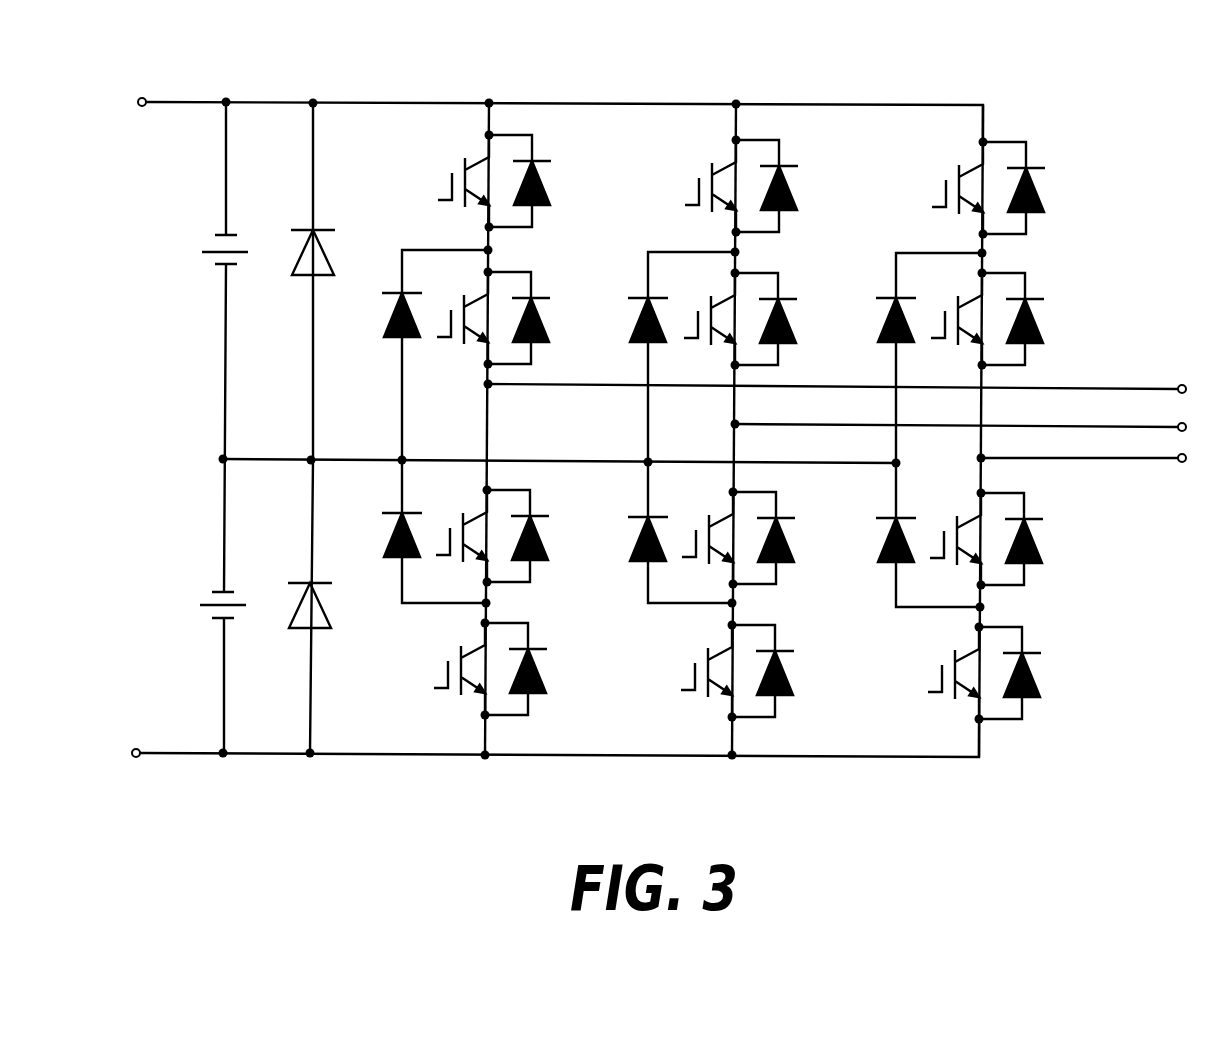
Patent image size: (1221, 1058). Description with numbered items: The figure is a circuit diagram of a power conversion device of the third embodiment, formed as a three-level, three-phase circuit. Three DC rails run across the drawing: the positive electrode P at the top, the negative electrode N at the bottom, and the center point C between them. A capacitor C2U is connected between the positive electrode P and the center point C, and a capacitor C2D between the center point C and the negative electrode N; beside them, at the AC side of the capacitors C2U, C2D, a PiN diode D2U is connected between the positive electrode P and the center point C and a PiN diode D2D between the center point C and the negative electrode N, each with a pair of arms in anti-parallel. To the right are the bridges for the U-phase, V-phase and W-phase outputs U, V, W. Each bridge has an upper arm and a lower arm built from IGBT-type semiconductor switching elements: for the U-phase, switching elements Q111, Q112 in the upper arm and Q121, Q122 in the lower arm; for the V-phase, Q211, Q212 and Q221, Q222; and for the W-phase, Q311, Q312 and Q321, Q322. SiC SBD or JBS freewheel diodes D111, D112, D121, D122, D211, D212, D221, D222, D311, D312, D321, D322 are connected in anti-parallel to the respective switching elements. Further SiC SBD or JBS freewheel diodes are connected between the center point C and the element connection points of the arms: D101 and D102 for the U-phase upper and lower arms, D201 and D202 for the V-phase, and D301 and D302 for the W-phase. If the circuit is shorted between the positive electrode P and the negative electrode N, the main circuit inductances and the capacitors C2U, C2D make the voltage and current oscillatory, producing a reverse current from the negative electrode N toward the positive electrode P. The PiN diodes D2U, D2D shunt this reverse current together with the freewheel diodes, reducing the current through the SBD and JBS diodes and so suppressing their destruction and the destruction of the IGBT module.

The positive electrode P is at (126, 99).
The negative electrode N is at (122, 754).
The center point C is at (203, 460).
The U-phase U is at (853, 390).
The V-phase V is at (976, 428).
The W-phase W is at (1099, 460).
The capacitor C2U is at (204, 230).
The capacitor C2D is at (201, 583).
The PiN diode D2U is at (293, 277).
The PiN diode D2D is at (291, 630).
The semiconductor switching element Q111 is at (440, 181).
The freewheel diode D111 is at (555, 181).
The semiconductor switching element Q112 is at (453, 313).
The freewheel diode D112 is at (554, 316).
The freewheel diode D101 is at (411, 353).
The semiconductor switching element Q121 is at (455, 528).
The freewheel diode D121 is at (546, 527).
The freewheel diode D102 is at (406, 534).
The semiconductor switching element Q122 is at (451, 662).
The freewheel diode D122 is at (551, 669).
The semiconductor switching element Q211 is at (693, 183).
The freewheel diode D211 is at (799, 186).
The semiconductor switching element Q212 is at (701, 313).
The freewheel diode D212 is at (796, 318).
The freewheel diode D201 is at (658, 355).
The semiconductor switching element Q221 is at (700, 529).
The freewheel diode D221 is at (793, 528).
The freewheel diode D202 is at (657, 535).
The semiconductor switching element Q222 is at (692, 666).
The freewheel diode D222 is at (793, 662).
The semiconductor switching element Q311 is at (937, 185).
The freewheel diode D311 is at (1049, 188).
The semiconductor switching element Q312 is at (947, 313).
The freewheel diode D312 is at (1047, 319).
The freewheel diode D301 is at (906, 356).
The semiconductor switching element Q321 is at (945, 529).
The freewheel diode D321 is at (1047, 539).
The freewheel diode D302 is at (905, 537).
The semiconductor switching element Q322 is at (938, 668).
The freewheel diode D322 is at (1044, 673).